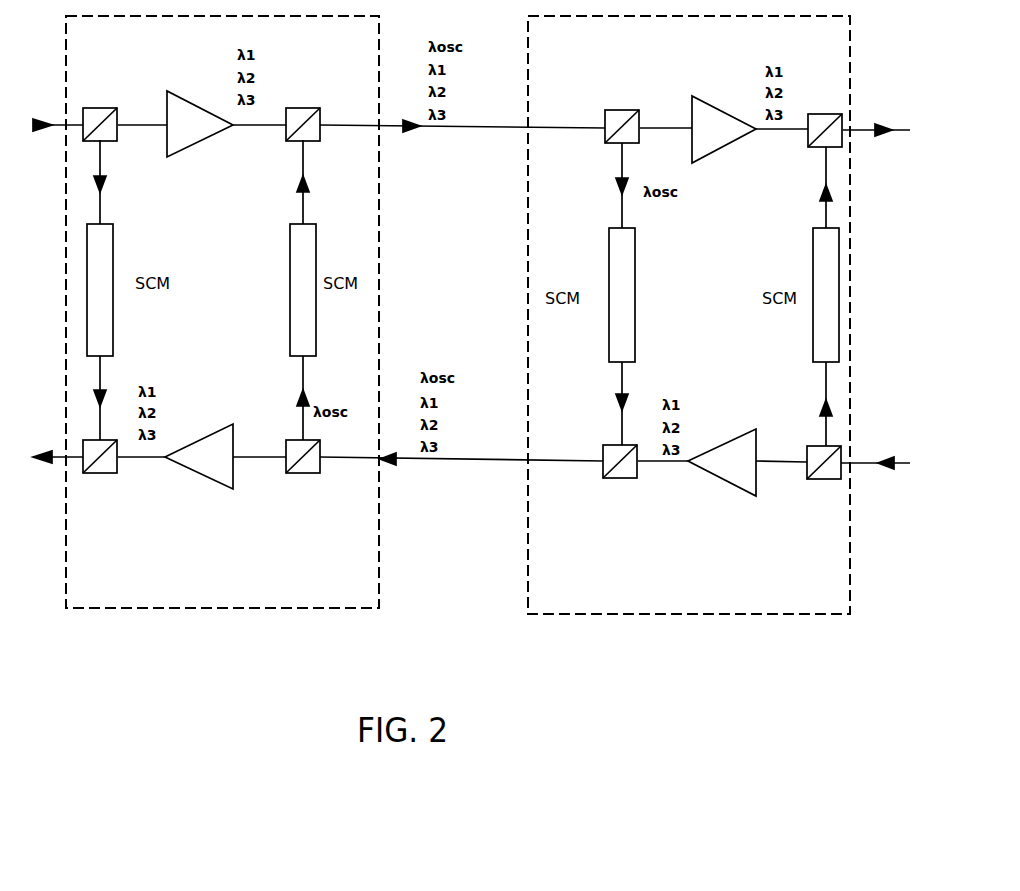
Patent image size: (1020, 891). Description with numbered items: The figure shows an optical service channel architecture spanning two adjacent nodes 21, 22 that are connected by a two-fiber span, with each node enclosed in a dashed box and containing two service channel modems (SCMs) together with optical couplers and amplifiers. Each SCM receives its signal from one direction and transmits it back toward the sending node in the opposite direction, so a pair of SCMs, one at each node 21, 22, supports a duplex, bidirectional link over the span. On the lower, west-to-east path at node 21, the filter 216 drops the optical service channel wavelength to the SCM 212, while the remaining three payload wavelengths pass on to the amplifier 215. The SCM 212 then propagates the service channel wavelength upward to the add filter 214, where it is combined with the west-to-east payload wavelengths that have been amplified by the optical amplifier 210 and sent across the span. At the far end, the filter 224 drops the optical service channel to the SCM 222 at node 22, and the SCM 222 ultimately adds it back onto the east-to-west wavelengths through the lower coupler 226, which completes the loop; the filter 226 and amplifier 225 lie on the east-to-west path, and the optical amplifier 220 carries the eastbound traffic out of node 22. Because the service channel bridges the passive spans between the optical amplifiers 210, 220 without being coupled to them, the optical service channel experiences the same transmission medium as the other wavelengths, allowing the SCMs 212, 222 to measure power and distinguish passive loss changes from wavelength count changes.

The node 21 is at (222, 312).
The node 22 is at (689, 315).
The optical amplifier 210 is at (205, 140).
The service channel modem 212 is at (290, 280).
The add filter 214 is at (307, 108).
The amplifier 215 is at (213, 480).
The filter 216 is at (295, 473).
The optical amplifier 220 is at (727, 147).
The service channel modem 222 is at (636, 280).
The filter 224 is at (628, 110).
The amplifier 225 is at (733, 488).
The filter 226 is at (617, 478).